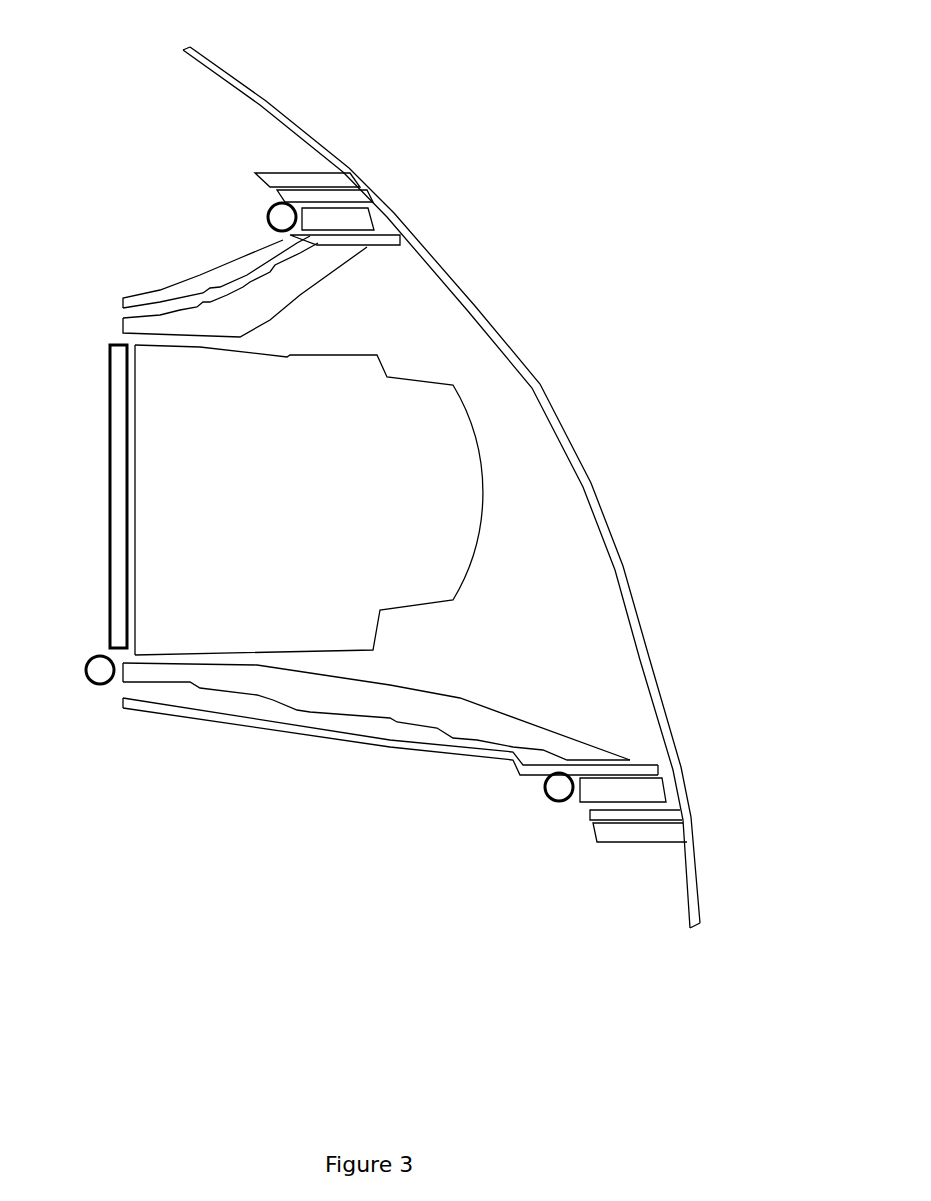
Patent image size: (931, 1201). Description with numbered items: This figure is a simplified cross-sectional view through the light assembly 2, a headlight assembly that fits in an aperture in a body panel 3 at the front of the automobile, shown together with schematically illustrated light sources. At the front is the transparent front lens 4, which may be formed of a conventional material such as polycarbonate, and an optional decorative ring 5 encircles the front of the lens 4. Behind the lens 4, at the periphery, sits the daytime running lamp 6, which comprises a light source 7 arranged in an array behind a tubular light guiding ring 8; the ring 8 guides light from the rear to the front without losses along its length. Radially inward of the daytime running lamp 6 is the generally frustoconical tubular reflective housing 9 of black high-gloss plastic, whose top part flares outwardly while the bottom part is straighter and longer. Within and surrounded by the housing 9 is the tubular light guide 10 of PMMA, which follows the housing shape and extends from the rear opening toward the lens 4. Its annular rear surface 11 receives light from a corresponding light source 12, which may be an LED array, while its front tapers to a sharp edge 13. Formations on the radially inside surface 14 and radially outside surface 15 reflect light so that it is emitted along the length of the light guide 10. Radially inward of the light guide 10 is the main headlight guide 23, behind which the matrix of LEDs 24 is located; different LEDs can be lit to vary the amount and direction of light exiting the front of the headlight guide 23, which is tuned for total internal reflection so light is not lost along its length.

The light assembly 2 is at (370, 740).
The body panel 3 is at (270, 100).
The transparent front lens 4 is at (535, 388).
The decorative ring 5 is at (357, 177).
The daytime running lamp 6 is at (375, 211).
The light source 7 is at (266, 217).
The tubular light guiding ring 8 is at (353, 220).
The reflective housing 9 is at (467, 760).
The tubular light guide 10 is at (223, 683).
The annular rear surface 11 is at (125, 672).
The light source 12 is at (90, 660).
The sharp edge 13 is at (630, 760).
The radially inside surface 14 is at (313, 293).
The radially outside surface 15 is at (225, 300).
The main headlight guide 23 is at (440, 515).
The matrix of LEDs 24 is at (117, 497).